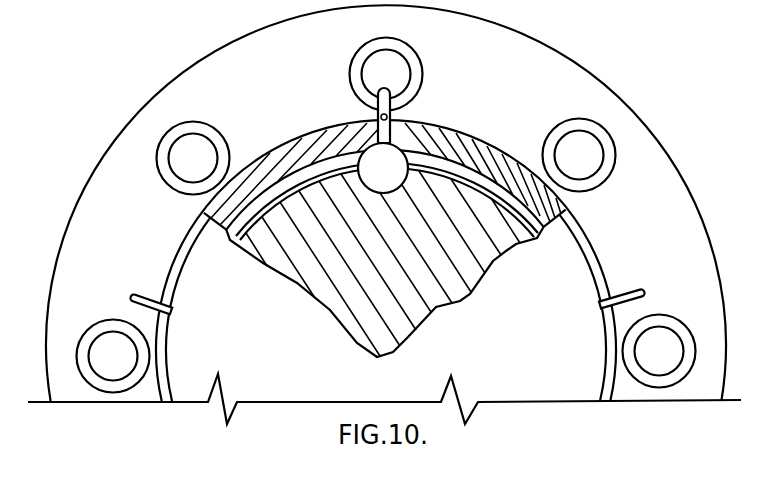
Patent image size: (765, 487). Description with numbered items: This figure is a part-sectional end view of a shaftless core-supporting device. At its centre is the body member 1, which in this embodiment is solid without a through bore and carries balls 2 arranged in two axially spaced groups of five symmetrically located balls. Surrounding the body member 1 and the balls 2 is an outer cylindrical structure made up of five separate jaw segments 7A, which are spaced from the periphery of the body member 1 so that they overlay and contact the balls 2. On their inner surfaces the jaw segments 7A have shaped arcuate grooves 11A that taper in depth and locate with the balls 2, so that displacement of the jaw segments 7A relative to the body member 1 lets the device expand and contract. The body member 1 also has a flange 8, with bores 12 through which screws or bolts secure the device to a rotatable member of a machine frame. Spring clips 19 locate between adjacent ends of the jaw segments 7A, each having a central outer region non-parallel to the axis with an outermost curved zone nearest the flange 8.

The body member 1 is at (310, 248).
The balls 2 is at (375, 165).
The jaw segments 7A is at (295, 157).
The flange 8 is at (133, 134).
The arcuate grooves 11A is at (430, 156).
The bores 12 is at (576, 150).
The spring clips 19 is at (611, 292).